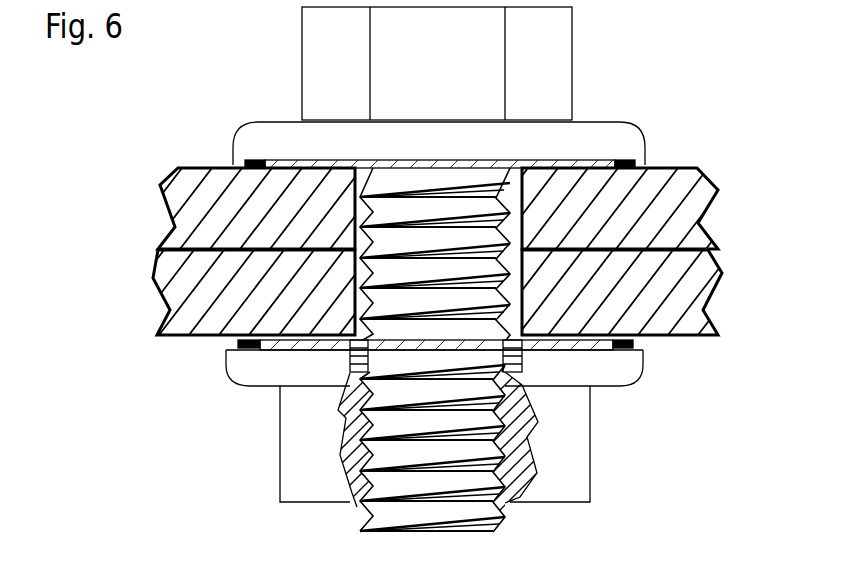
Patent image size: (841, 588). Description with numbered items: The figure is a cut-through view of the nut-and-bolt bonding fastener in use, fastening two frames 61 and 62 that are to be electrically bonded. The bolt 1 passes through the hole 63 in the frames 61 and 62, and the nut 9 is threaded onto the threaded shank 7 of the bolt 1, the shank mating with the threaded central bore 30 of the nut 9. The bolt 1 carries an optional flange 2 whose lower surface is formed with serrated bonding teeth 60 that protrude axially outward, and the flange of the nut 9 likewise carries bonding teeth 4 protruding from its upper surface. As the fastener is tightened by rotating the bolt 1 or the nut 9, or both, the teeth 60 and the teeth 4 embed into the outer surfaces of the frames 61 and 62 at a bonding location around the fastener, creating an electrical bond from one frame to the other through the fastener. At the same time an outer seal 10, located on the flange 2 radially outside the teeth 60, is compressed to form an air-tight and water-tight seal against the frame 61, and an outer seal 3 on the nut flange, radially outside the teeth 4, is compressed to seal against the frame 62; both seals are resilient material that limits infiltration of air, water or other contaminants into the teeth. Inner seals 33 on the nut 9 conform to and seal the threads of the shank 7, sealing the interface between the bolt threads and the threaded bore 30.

The bolt 1 is at (547, 53).
The flange 2 is at (628, 126).
The outer seal 3 is at (236, 349).
The bonding teeth 4 is at (288, 350).
The threaded shank 7 is at (363, 508).
The nut 9 is at (300, 423).
The outer seal 10 is at (258, 163).
The central bore 30 is at (528, 460).
The inner seals 33 is at (522, 347).
The bonding teeth 60 is at (312, 164).
The frame 61 is at (182, 188).
The frame 62 is at (185, 312).
The hole 63 is at (360, 308).